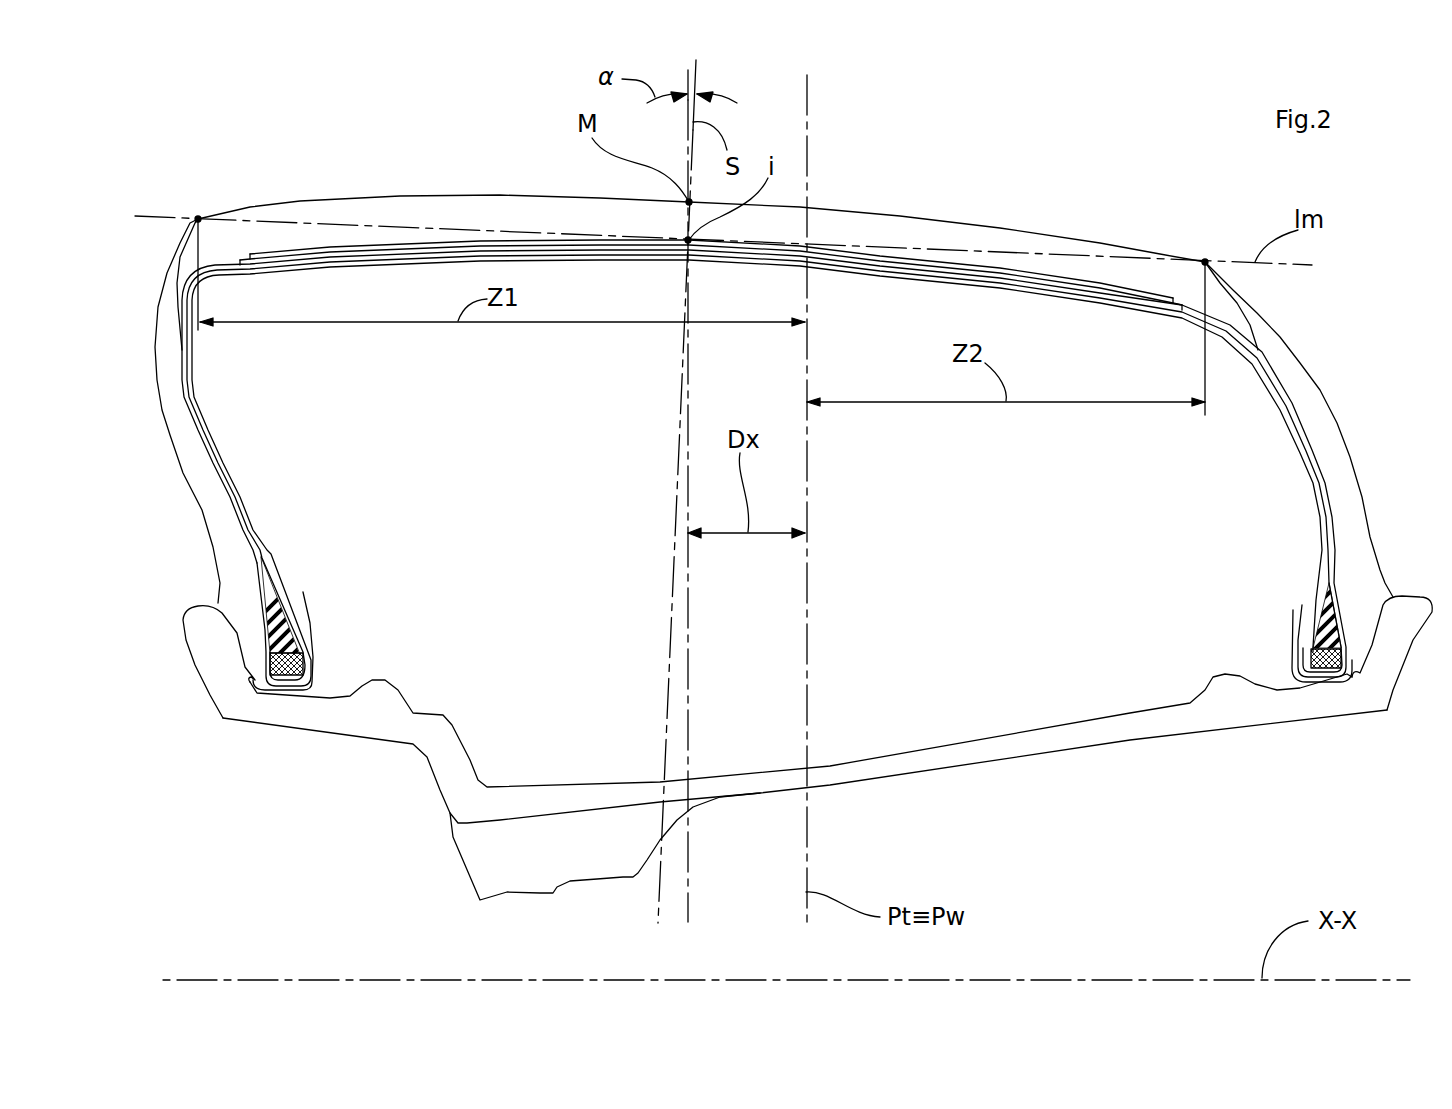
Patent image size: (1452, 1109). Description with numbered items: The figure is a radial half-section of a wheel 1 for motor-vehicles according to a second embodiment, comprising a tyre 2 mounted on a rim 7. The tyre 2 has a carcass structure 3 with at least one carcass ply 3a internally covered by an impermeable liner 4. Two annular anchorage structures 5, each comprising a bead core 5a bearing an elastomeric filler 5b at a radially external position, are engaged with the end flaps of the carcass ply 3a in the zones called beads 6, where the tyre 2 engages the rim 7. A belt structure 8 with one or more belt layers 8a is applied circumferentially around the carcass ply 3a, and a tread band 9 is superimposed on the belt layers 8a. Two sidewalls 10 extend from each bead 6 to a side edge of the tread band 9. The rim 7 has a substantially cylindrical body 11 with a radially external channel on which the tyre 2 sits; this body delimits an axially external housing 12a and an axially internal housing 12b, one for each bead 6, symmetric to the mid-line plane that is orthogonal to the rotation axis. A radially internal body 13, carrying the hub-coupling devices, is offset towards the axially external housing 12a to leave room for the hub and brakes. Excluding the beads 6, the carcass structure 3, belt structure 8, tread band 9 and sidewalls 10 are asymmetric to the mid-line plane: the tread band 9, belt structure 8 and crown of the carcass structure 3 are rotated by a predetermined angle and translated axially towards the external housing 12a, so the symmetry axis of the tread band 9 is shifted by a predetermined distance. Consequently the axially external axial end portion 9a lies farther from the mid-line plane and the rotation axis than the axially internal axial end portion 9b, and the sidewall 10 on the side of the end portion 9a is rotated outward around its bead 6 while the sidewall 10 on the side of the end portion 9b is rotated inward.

The wheel 1 is at (250, 813).
The tyre 2 is at (312, 188).
The carcass structure 3 is at (1300, 402).
The carcass ply 3a is at (1318, 453).
The liner 4 is at (390, 260).
The annular anchorage structure 5 is at (300, 606).
The bead core 5a is at (303, 664).
The elastomeric filler 5b is at (263, 562).
The bead 6 is at (322, 637).
The mounting rim 7 is at (397, 840).
The belt structure 8 is at (1187, 295).
The belt layer 8a is at (240, 258).
The tread band 9 is at (933, 213).
The axially external axial end portion 9a is at (198, 219).
The axially internal axial end portion 9b is at (1205, 262).
The sidewall 10 is at (210, 495).
The substantially cylindrical body 11 is at (1012, 765).
The axially external housing 12a is at (256, 681).
The axially internal housing 12b is at (1353, 680).
The radially internal body 13 is at (460, 866).